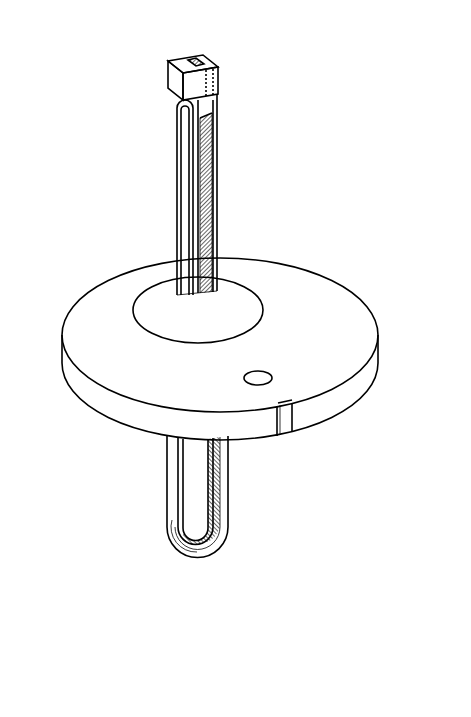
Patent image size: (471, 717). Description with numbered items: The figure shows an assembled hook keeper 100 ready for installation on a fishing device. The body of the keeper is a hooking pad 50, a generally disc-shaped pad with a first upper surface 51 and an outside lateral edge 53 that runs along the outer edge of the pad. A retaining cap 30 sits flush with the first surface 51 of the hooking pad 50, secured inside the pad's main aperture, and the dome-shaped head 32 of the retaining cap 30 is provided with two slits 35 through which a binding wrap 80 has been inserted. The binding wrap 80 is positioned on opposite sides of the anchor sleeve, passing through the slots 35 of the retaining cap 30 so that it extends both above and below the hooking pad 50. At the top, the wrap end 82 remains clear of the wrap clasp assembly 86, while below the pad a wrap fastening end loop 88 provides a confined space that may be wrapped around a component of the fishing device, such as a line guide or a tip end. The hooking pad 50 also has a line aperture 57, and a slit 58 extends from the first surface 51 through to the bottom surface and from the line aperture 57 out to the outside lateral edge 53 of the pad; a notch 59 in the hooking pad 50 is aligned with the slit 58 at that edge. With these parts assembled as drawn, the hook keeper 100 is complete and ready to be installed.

The hook keeper 100 is at (123, 217).
The binding wrap 80 is at (222, 55).
The wrap clasp assembly 86 is at (183, 82).
The wrap end 82 is at (183, 123).
The slot 35 is at (178, 280).
The hooking pad 50 is at (306, 291).
The first upper surface 51 is at (275, 278).
The outside lateral edge 53 is at (152, 420).
The dome-shaped head 32 is at (235, 315).
The retaining cap 30 is at (177, 323).
The line aperture 57 is at (247, 376).
The slit 58 is at (277, 401).
The notch 59 is at (287, 423).
The wrap fastening end loop 88 is at (227, 567).